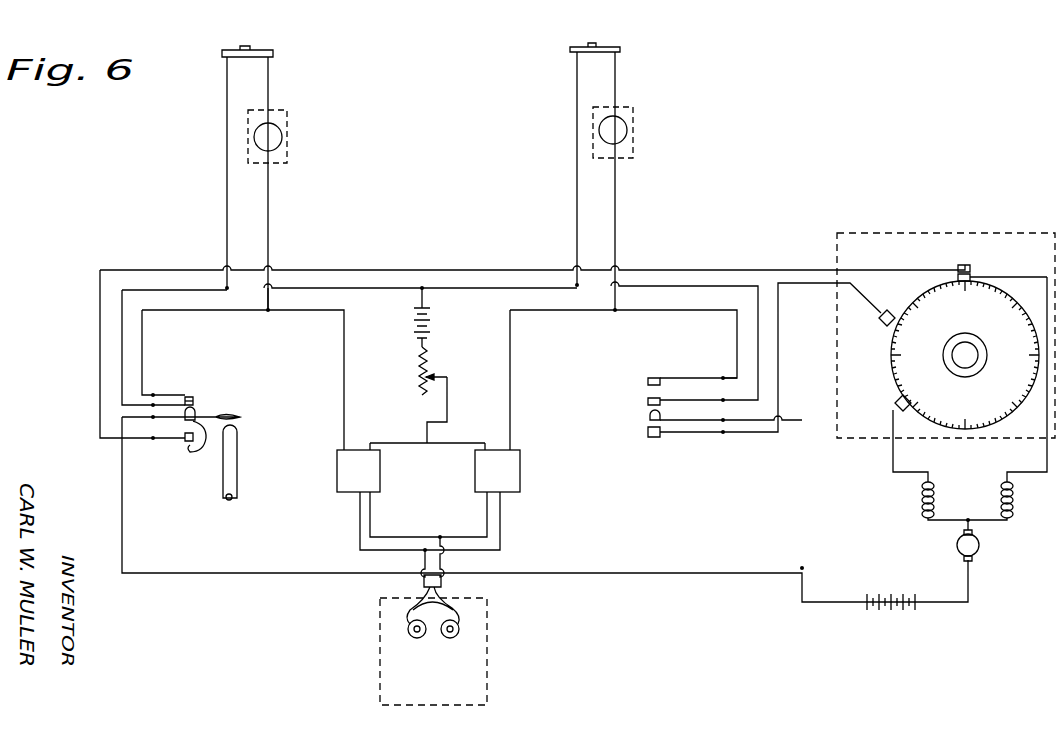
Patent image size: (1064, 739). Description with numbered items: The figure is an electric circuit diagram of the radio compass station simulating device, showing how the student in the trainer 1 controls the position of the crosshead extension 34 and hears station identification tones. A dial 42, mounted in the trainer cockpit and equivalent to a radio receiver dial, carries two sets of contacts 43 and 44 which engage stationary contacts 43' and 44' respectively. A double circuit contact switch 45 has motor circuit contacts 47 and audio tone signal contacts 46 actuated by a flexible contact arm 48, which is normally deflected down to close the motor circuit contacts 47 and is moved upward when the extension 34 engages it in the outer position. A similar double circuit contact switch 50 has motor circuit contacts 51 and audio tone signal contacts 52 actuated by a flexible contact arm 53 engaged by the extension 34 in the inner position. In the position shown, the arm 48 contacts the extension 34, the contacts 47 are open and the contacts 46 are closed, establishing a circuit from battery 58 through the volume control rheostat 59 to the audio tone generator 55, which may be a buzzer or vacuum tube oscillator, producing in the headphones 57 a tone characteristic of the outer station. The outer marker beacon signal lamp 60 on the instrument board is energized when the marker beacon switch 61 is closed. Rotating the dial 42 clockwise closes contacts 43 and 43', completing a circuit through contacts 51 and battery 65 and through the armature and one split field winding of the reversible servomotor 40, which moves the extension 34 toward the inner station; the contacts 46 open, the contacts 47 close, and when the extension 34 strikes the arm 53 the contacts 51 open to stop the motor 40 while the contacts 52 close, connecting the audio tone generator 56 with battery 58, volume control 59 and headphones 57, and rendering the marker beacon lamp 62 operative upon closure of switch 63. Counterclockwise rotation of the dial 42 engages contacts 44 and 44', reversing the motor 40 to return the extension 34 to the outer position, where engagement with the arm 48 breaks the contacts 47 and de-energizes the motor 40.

The trainer 1 is at (288, 153).
The crosshead extension 34 is at (237, 460).
The reversible electric servomotor 40 is at (921, 512).
The dial 42 is at (946, 286).
The dial contact 43 is at (889, 405).
The stationary contact 43' is at (874, 320).
The dial contact 44 is at (983, 274).
The stationary contact 44' is at (985, 257).
The double circuit contact switch 45 is at (165, 394).
The audio tone signal contacts 46 is at (195, 400).
The motor circuit contacts 47 is at (198, 444).
The flexible contact arm 48 is at (215, 417).
The double circuit contact switch 50 is at (713, 380).
The motor circuit contacts 51 is at (648, 432).
The audio tone signal contacts 52 is at (648, 400).
The flexible contact arm 53 is at (648, 418).
The audio tone generator 55 is at (337, 489).
The audio tone generator 56 is at (520, 488).
The headphones 57 is at (450, 638).
The battery 58 is at (430, 328).
The volume control rheostat 59 is at (447, 377).
The outer marker beacon signal lamp 60 is at (280, 135).
The marker beacon switch 61 is at (268, 50).
The marker beacon lamp 62 is at (627, 128).
The switch 63 is at (608, 47).
The battery 65 is at (890, 612).